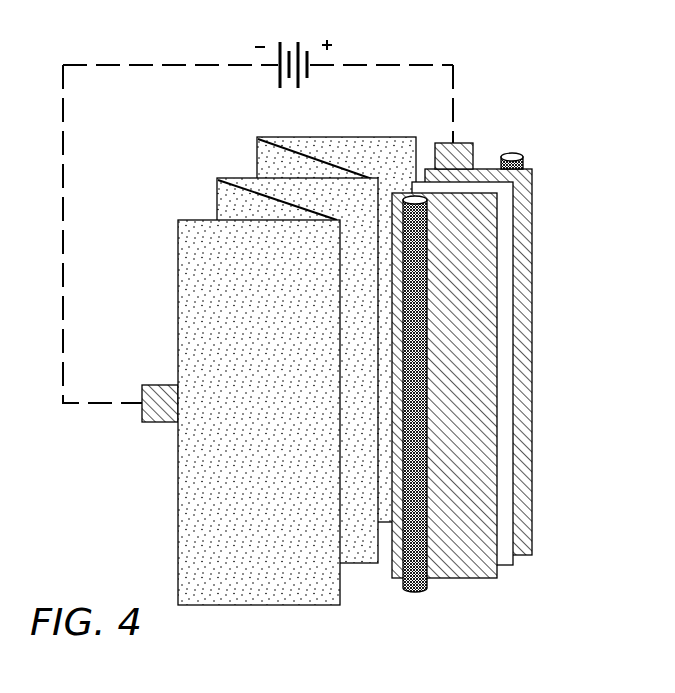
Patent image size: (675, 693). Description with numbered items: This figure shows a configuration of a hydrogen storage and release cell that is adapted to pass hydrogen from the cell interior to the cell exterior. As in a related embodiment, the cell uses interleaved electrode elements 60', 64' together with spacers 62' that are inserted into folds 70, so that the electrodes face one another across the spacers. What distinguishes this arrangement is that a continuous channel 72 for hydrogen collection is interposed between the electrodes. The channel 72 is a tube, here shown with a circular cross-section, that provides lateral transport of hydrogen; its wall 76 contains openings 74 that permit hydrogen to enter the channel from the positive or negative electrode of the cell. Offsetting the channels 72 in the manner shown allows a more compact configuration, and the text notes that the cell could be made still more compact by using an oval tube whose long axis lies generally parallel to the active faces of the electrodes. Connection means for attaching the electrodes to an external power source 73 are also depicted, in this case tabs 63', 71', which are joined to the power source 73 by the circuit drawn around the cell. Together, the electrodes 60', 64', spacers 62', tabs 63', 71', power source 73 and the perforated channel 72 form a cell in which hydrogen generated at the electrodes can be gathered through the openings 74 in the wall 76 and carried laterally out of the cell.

The external power source 73 is at (291, 43).
The interleaved electrode element 60' is at (305, 305).
The folds 70 is at (248, 178).
The tab 71' is at (234, 412).
The interleaved electrode element 64' is at (522, 362).
The tab 63' is at (488, 117).
The spacer 62' is at (523, 344).
The openings 74 is at (405, 587).
The wall 76 is at (414, 198).
The continuous channel 72 is at (525, 158).